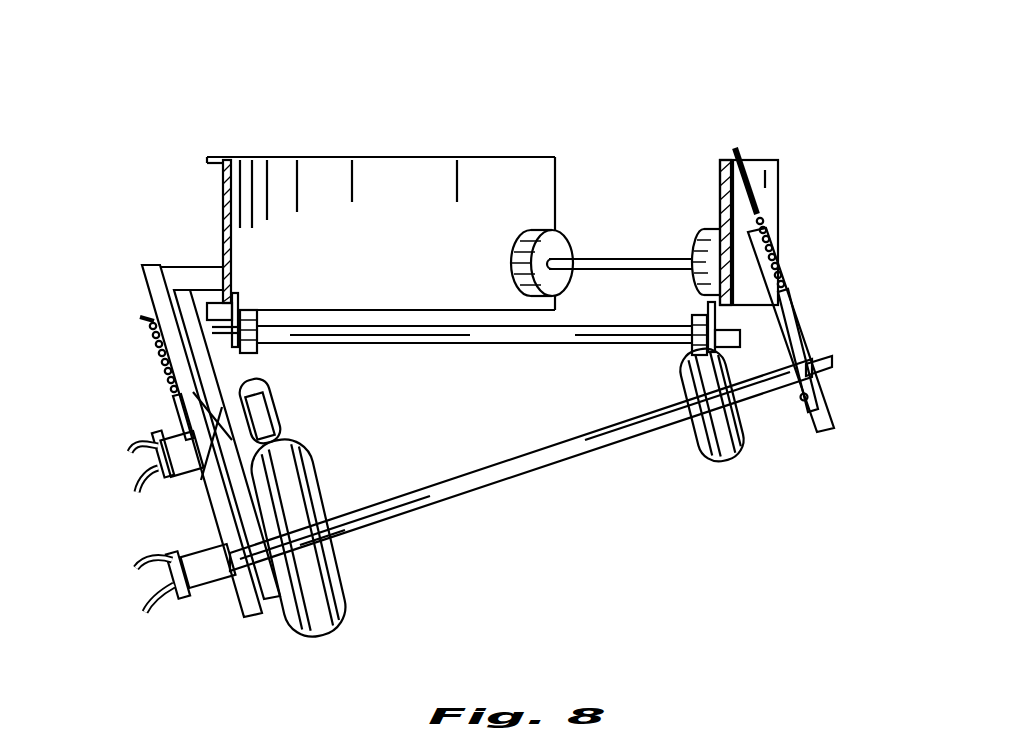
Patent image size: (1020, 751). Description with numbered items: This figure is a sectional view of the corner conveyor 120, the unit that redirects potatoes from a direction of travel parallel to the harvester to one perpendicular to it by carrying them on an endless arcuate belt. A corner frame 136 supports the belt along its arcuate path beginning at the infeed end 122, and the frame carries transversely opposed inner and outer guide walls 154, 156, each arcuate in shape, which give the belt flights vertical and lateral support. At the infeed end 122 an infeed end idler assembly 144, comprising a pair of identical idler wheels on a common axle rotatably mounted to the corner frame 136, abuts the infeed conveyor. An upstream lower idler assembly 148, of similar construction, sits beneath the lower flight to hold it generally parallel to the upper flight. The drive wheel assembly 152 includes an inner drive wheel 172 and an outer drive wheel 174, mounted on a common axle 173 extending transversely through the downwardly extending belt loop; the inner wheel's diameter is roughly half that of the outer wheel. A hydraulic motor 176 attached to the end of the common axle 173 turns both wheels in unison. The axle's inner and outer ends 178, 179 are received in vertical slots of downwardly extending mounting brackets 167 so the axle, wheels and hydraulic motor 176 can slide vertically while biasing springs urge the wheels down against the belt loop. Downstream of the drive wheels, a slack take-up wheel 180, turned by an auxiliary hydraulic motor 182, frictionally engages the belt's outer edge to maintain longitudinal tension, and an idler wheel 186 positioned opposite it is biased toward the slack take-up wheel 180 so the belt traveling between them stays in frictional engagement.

The corner conveyor 120 is at (582, 88).
The infeed end 122 is at (800, 170).
The corner frame 136 is at (132, 260).
The infeed end idler assembly 144 is at (616, 256).
The upstream lower idler assembly 148 is at (335, 342).
The drive wheel assembly 152 is at (452, 505).
The inner guide wall 154 is at (721, 182).
The outer guide wall 156 is at (224, 222).
The mounting bracket 167 is at (800, 330).
The inner drive wheel 172 is at (735, 462).
The common axle 173 is at (527, 473).
The outer drive wheel 174 is at (352, 618).
The hydraulic motor 176 is at (172, 548).
The inner end of drive axle 178 is at (641, 413).
The outer end of drive axle 179 is at (338, 494).
The slack take-up wheel 180 is at (262, 384).
The hydraulic motor 182 is at (160, 440).
The idler wheel 186 is at (276, 423).